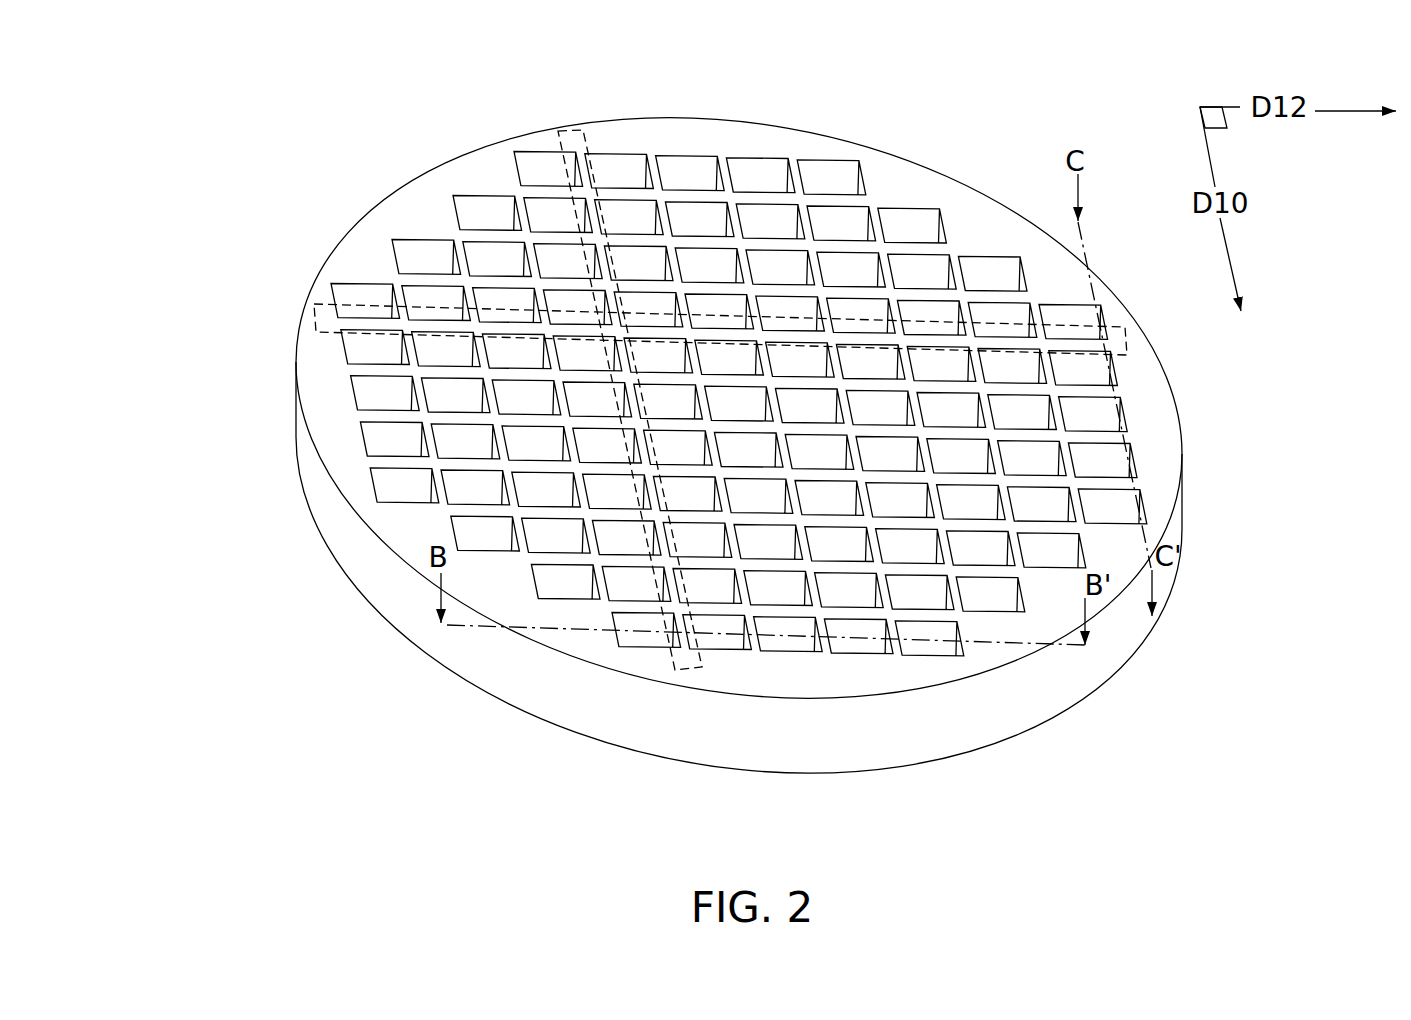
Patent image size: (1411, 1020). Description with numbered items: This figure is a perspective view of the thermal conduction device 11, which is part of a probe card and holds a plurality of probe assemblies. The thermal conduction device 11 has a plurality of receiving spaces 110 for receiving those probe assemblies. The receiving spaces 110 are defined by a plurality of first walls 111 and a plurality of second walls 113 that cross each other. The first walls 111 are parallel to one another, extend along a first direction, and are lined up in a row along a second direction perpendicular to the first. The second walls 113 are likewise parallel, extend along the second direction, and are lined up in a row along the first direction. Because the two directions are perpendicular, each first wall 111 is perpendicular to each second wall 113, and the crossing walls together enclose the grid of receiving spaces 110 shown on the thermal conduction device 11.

The thermal conduction device 11 is at (322, 250).
The receiving space 110 is at (556, 219).
The first wall 111 is at (578, 128).
The second wall 113 is at (315, 304).